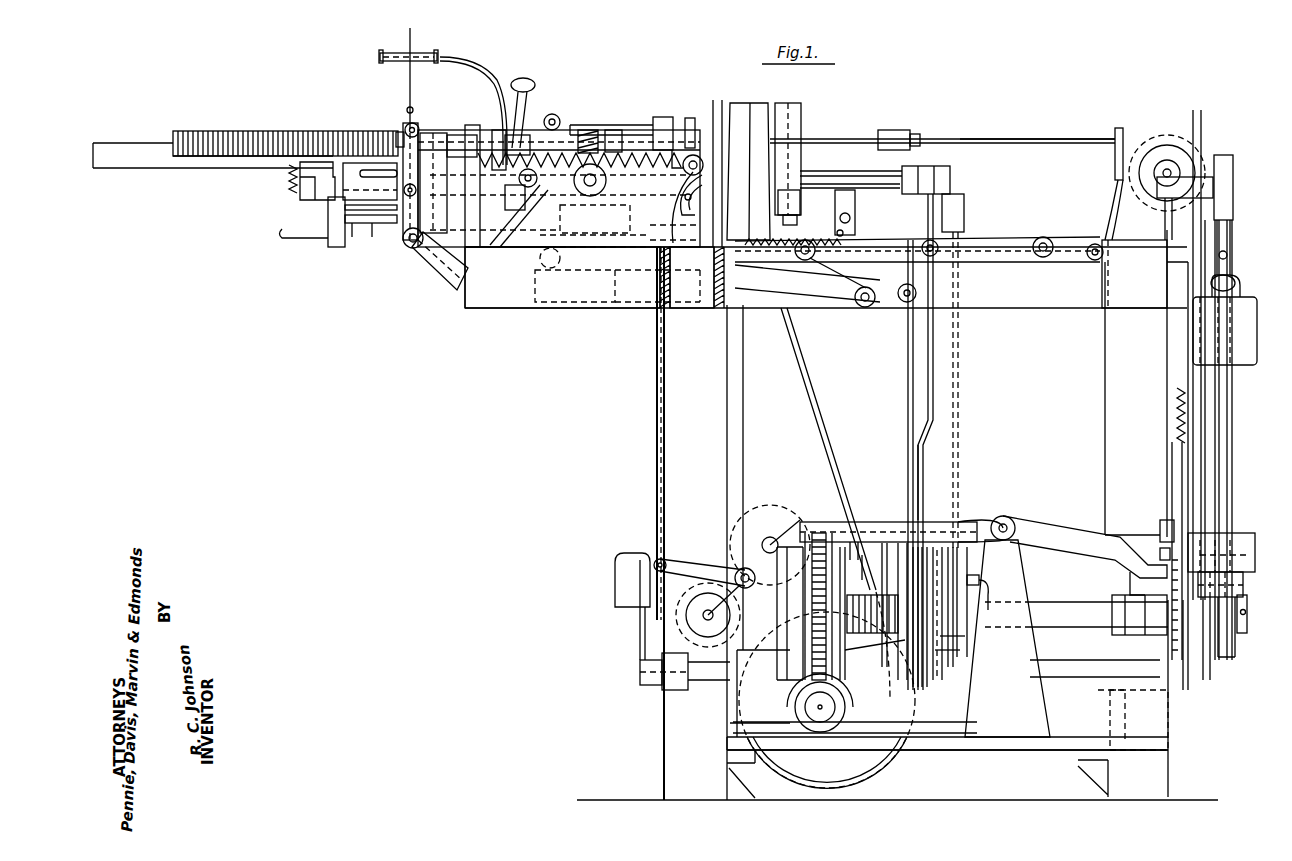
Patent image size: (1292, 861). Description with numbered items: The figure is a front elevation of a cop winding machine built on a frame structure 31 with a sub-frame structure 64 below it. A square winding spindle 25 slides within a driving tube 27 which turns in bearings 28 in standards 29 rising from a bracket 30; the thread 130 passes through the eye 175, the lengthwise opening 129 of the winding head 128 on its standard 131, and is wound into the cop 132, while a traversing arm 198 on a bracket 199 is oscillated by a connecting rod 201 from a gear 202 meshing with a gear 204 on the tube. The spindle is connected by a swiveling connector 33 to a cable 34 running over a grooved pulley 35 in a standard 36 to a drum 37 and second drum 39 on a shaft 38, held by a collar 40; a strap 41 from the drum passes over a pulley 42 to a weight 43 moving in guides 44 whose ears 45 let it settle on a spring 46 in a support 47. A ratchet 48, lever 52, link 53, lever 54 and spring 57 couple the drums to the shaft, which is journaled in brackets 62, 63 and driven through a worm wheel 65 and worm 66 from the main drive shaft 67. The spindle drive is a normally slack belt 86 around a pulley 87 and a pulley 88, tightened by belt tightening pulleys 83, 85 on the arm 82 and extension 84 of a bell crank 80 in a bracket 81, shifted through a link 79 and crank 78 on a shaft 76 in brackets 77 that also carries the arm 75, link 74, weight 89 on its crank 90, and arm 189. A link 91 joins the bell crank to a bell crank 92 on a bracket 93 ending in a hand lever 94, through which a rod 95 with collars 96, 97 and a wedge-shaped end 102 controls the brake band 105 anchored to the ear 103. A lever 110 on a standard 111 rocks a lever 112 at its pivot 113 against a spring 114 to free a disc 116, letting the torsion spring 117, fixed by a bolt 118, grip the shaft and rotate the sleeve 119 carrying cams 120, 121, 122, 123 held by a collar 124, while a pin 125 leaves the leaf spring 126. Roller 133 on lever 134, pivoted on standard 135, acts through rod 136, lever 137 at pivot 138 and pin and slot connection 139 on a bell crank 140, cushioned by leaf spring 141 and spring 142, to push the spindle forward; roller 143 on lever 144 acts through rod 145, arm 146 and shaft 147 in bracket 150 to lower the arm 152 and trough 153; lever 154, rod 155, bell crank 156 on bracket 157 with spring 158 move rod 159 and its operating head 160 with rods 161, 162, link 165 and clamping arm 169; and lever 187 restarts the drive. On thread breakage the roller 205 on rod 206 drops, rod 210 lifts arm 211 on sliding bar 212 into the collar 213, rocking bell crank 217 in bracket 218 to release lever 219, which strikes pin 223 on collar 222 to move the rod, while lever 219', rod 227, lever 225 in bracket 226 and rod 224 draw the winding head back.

The winding spindle 25 is at (822, 138).
The driving tube 27 is at (517, 136).
The bearings 28 is at (470, 125).
The standards 29 is at (492, 130).
The bracket 30 is at (702, 270).
The frame structure 31 is at (508, 308).
The swiveling connector 33 is at (902, 130).
The cable 34 is at (1062, 137).
The grooved pulley 35 is at (1180, 140).
The standard 36 is at (1172, 225).
The drum 37 is at (1206, 670).
The shaft 38 is at (1065, 602).
The second drum 39 is at (1235, 657).
The collar 40 is at (1246, 622).
The strap 41 is at (1230, 482).
The pulley 42 is at (1235, 172).
The weight 43 is at (1250, 342).
The guides 44 is at (1185, 372).
The ears 45 is at (1250, 533).
The spring 46 is at (1250, 557).
The support 47 is at (1243, 590).
The ratchet 48 is at (1184, 680).
The lever 52 is at (1160, 532).
The link 53 is at (1160, 556).
The lever 54 is at (1170, 472).
The spring 57 is at (1175, 415).
The bracket 62 is at (1130, 585).
The bracket 63 is at (792, 613).
The sub-frame structure 64 is at (966, 745).
The worm wheel 65 is at (848, 682).
The worm 66 is at (852, 712).
The main drive shaft 67 is at (824, 720).
The link 74 is at (1150, 595).
The arm 75 is at (1160, 700).
The shaft 76 is at (1060, 665).
The brackets 77 is at (1098, 695).
The crank 78 is at (678, 690).
The link 79 is at (655, 598).
The bell crank 80 is at (695, 560).
The bracket 81 is at (735, 712).
The arm 82 is at (762, 505).
The belt tightening pulley 83 is at (790, 512).
The extension 84 is at (705, 615).
The belt tightening pulley 85 is at (690, 625).
The driving belt 86 is at (745, 385).
The pulley 87 is at (775, 768).
The pulley 88 is at (752, 103).
The weight 89 is at (615, 577).
The crank 90 is at (640, 640).
The link 91 is at (655, 382).
The bell crank 92 is at (615, 280).
The bracket 93 is at (540, 285).
The hand lever 94 is at (524, 78).
The rod 95 is at (595, 219).
The collar 96 is at (540, 262).
The collar 97 is at (595, 238).
The wedge-shaped end 102 is at (772, 190).
The ear 103 is at (797, 222).
The brake band 105 is at (792, 103).
The lever 110 is at (1062, 530).
The standard 111 is at (1020, 583).
The lever 112 is at (828, 533).
The pivot 113 is at (852, 512).
The spring 114 is at (815, 522).
The disc 116 is at (862, 530).
The torsion spring 117 is at (875, 637).
The bolt 118 is at (882, 522).
The sleeve 119 is at (898, 543).
The cam 120 is at (913, 687).
The cam 121 is at (925, 687).
The cam 122 is at (952, 670).
The cam 123 is at (960, 651).
The collar 124 is at (967, 636).
The pin 125 is at (986, 580).
The leaf spring 126 is at (971, 575).
The winding head 128 is at (420, 128).
The lengthwise opening 129 is at (404, 126).
The thread 130 is at (408, 28).
The standard 131 is at (420, 234).
The cop 132 is at (258, 130).
The roller 133 is at (938, 522).
The lever 134 is at (925, 500).
The standard 135 is at (858, 505).
The rod 136 is at (935, 390).
The lever 137 is at (980, 262).
The pivot 138 is at (807, 260).
The pin and slot connection 139 is at (1040, 257).
The bell crank 140 is at (1090, 260).
The leaf spring 141 is at (1135, 225).
The spring 142 is at (1126, 150).
The roller 143 is at (965, 545).
The lever 144 is at (965, 530).
The rod 145 is at (960, 423).
The arm 146 is at (962, 200).
The shaft 147 is at (872, 180).
The bracket 150 is at (925, 166).
The arm 152 is at (318, 198).
The trough 153 is at (245, 160).
The lever 154 is at (870, 652).
The rod 155 is at (906, 392).
The bell crank 156 is at (875, 272).
The bracket 157 is at (845, 305).
The spring 158 is at (840, 230).
The rod 159 is at (820, 184).
The operating head 160 is at (333, 240).
The rod 161 is at (290, 240).
The rod 162 is at (352, 237).
The link 165 is at (372, 237).
The arm 169 is at (392, 178).
The eye 175 is at (408, 106).
The lever 187 is at (952, 522).
The arm 189 is at (938, 680).
The traversing arm 198 is at (396, 135).
The bracket 199 is at (440, 262).
The connecting rod 201 is at (445, 210).
The gear 202 is at (612, 130).
The gear 204 is at (586, 130).
The roller 205 is at (432, 50).
The rod 206 is at (478, 62).
The rod 210 is at (507, 244).
The arm 211 is at (522, 210).
The sliding bar 212 is at (651, 236).
The collar 213 is at (500, 235).
The bell crank 217 is at (703, 160).
The bracket 218 is at (668, 250).
The lever 219 is at (686, 131).
The lever 219' is at (674, 108).
The collar 222 is at (676, 238).
The pin 223 is at (656, 117).
The rod 224 is at (460, 135).
The lever 225 is at (550, 113).
The bracket 226 is at (595, 128).
The rod 227 is at (630, 125).